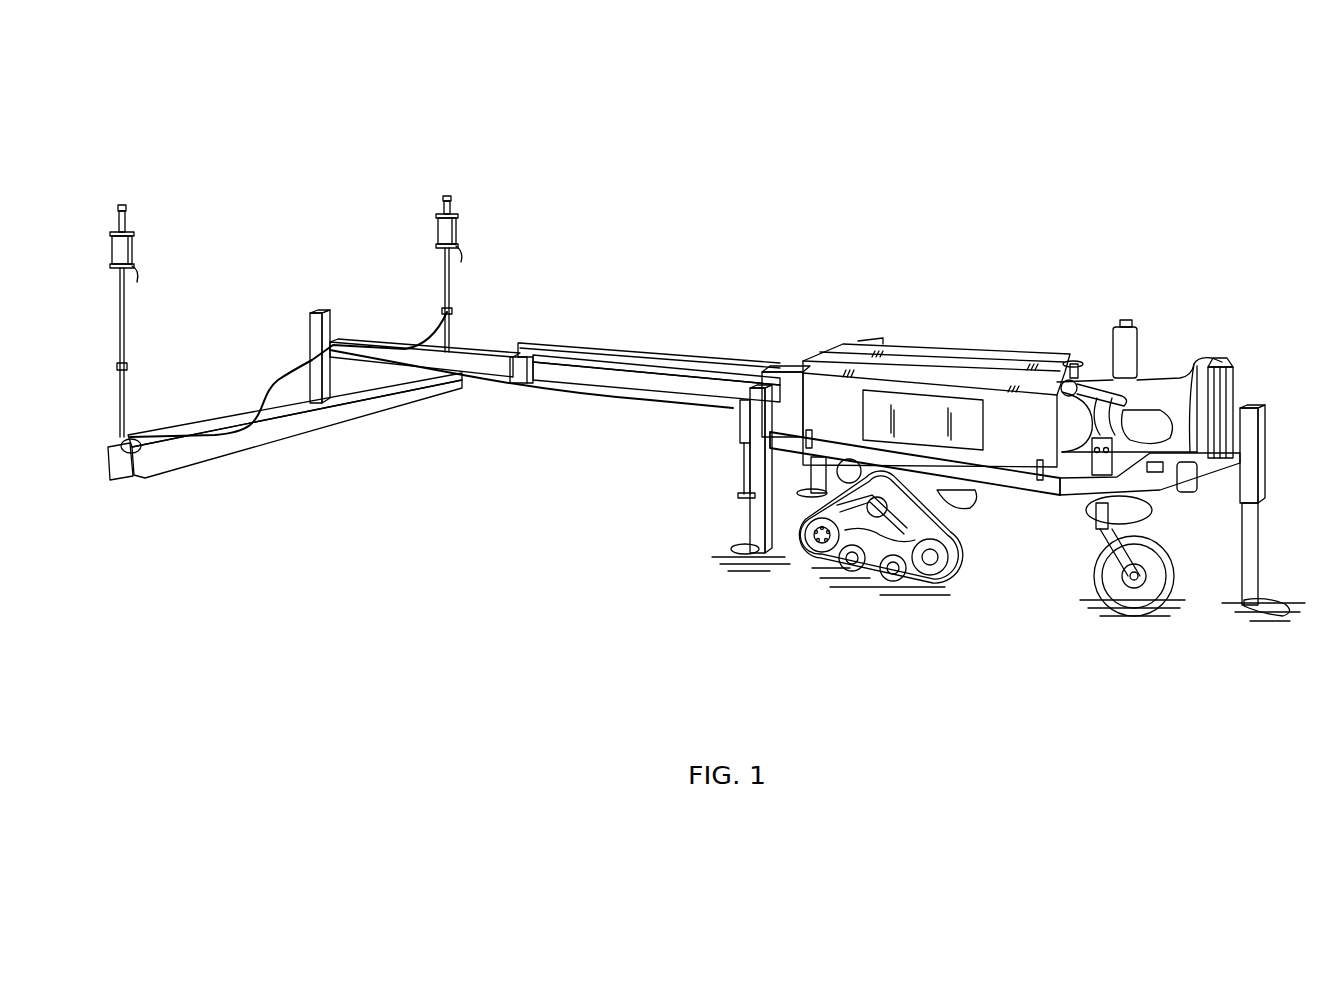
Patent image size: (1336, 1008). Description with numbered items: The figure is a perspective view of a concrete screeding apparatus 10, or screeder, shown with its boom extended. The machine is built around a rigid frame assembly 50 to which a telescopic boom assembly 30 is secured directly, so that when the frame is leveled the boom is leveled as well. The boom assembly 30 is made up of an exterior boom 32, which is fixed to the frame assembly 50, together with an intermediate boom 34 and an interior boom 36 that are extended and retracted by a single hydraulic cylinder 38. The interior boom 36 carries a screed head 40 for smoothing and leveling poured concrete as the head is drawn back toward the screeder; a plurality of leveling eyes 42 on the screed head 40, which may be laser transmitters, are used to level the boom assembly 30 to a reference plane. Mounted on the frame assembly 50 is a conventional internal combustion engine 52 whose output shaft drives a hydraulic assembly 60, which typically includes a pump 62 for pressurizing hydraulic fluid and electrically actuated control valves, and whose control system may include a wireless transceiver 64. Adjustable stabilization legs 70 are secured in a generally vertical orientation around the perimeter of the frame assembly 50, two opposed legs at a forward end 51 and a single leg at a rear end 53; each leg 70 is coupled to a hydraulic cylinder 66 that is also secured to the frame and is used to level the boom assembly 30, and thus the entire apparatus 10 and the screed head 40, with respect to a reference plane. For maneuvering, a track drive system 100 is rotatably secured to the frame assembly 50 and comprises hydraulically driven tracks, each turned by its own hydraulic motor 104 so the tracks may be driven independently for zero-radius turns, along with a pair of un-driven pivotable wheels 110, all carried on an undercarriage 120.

The concrete screeding apparatus 10 is at (1115, 240).
The telescopic boom assembly 30 is at (670, 382).
The exterior boom 32 is at (790, 375).
The intermediate boom 34 is at (582, 378).
The interior boom 36 is at (461, 364).
The hydraulic cylinder 38 is at (765, 367).
The screed head 40 is at (300, 430).
The leveling eyes 42 is at (133, 247).
The rigid frame assembly 50 is at (1023, 483).
The forward end 51 is at (785, 448).
The internal combustion engine 52 is at (1142, 395).
The rear end 53 is at (1222, 481).
The hydraulic assembly 60 is at (845, 400).
The pump 62 is at (1062, 385).
The wireless transceiver 64 is at (935, 400).
The hydraulic cylinder 66 is at (745, 423).
The adjustable stabilization legs 70 is at (745, 545).
The track drive system 100 is at (880, 540).
The hydraulic motor 104 is at (822, 548).
The pivotable wheels 110 is at (1159, 521).
The undercarriage 120 is at (968, 508).